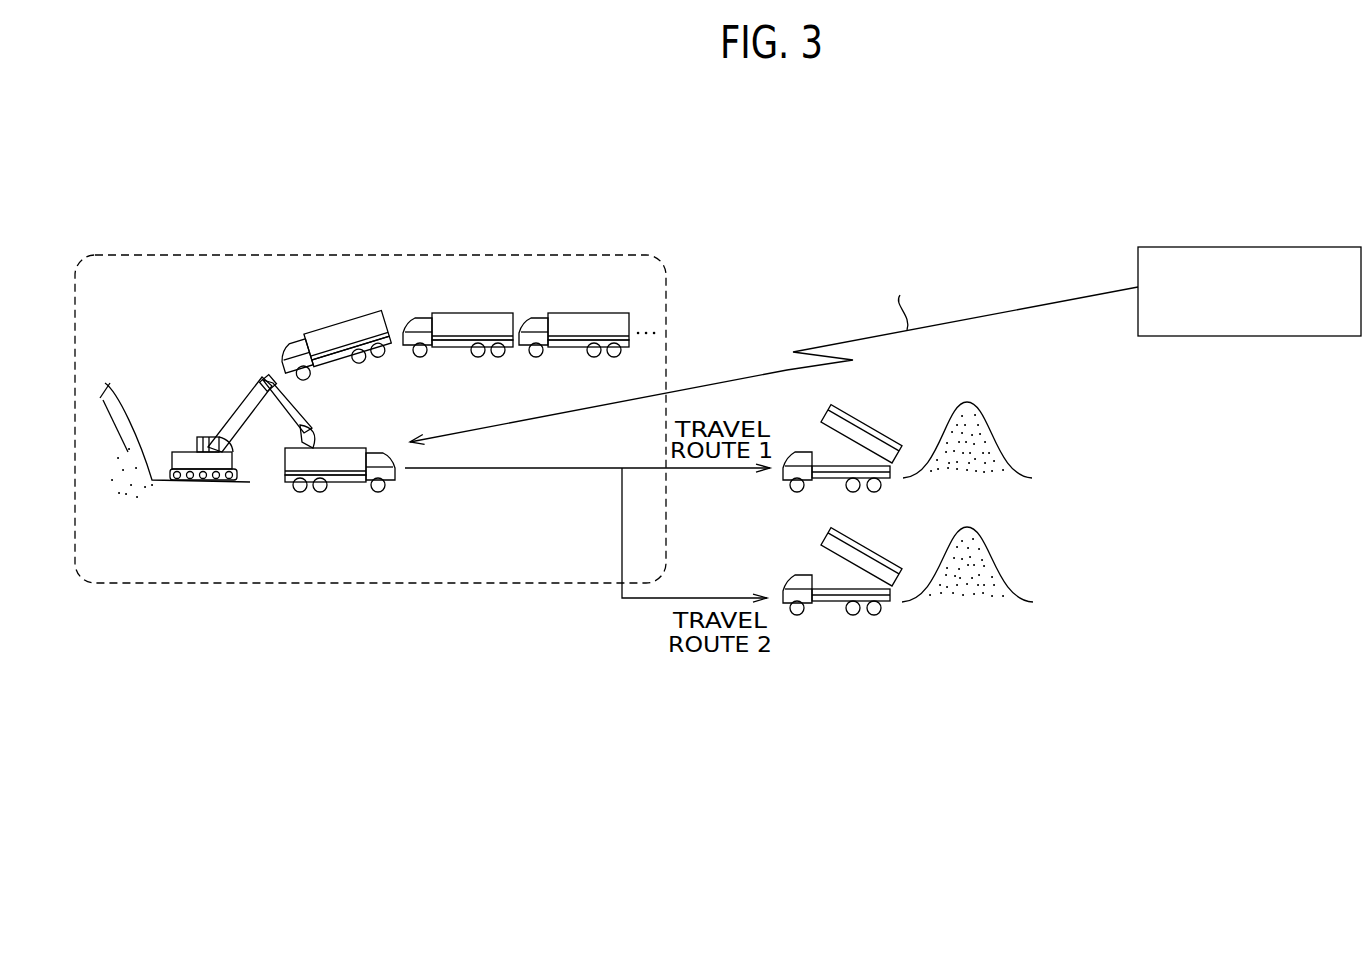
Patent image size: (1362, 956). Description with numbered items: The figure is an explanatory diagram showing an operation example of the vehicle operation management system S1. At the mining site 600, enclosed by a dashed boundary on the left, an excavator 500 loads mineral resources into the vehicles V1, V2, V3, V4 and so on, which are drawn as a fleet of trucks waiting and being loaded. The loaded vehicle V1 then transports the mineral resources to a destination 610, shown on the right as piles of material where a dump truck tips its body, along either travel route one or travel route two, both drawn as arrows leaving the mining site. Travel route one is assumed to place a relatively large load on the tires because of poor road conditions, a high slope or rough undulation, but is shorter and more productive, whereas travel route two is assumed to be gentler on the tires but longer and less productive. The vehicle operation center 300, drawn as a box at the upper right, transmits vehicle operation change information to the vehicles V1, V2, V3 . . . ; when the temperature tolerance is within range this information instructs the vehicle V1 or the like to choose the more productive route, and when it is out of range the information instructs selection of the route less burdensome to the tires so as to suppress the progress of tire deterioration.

The mining site 600 is at (460, 253).
The excavator 500 is at (235, 405).
The vehicle operation center 300 is at (1228, 247).
The destination 610 is at (1008, 555).
The vehicle operation management system S1 is at (768, 228).
The vehicle V1 is at (348, 492).
The vehicle V2 is at (325, 322).
The vehicle V3 is at (462, 313).
The vehicle V4 is at (578, 313).